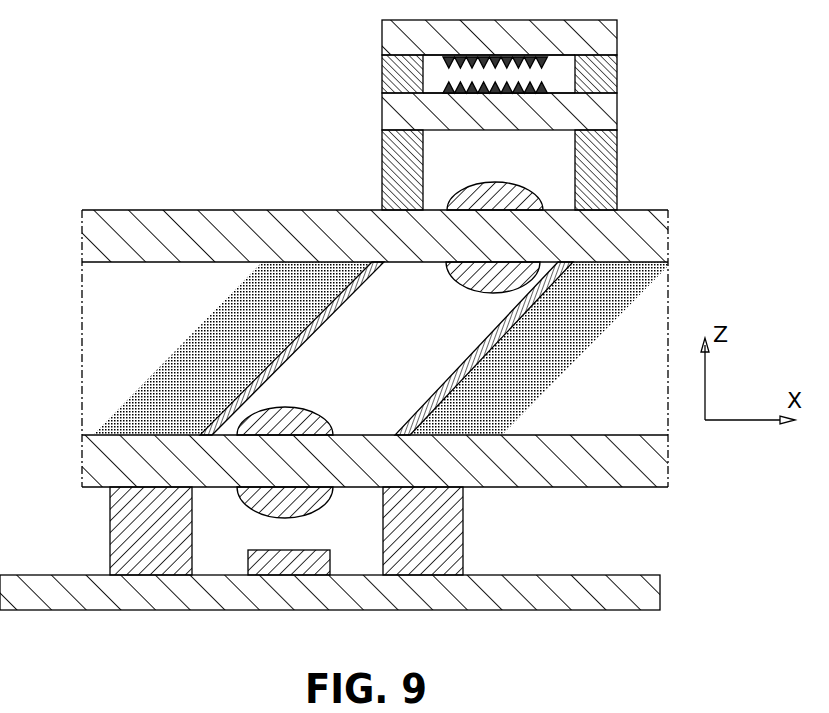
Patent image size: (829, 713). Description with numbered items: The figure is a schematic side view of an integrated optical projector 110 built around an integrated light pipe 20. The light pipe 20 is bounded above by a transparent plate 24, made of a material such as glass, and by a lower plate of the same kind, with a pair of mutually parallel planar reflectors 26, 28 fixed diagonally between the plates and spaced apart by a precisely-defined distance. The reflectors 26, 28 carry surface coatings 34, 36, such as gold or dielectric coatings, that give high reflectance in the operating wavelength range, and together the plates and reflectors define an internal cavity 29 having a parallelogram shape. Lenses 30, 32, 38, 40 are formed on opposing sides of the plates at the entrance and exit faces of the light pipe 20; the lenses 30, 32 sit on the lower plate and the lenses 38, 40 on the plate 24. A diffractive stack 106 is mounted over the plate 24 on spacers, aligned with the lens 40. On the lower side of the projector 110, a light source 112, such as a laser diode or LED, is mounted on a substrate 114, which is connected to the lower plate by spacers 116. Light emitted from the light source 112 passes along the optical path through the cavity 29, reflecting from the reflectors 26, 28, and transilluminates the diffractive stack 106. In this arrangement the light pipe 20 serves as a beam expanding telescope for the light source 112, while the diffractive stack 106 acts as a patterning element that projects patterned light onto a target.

The integrated optical projector 110 is at (149, 125).
The diffractive stack 106 is at (627, 20).
The lens 40 is at (482, 185).
The plate 24 is at (657, 238).
The light pipe 20 is at (70, 210).
The reflector 26 is at (196, 343).
The surface coating 34 is at (325, 315).
The internal cavity 29 is at (466, 343).
The surface coating 36 is at (422, 410).
The reflector 28 is at (562, 362).
The lens 38 is at (457, 287).
The lens 32 is at (305, 408).
The lens 30 is at (318, 506).
The spacers 116 is at (126, 542).
The light source 112 is at (268, 555).
The substrate 114 is at (610, 577).